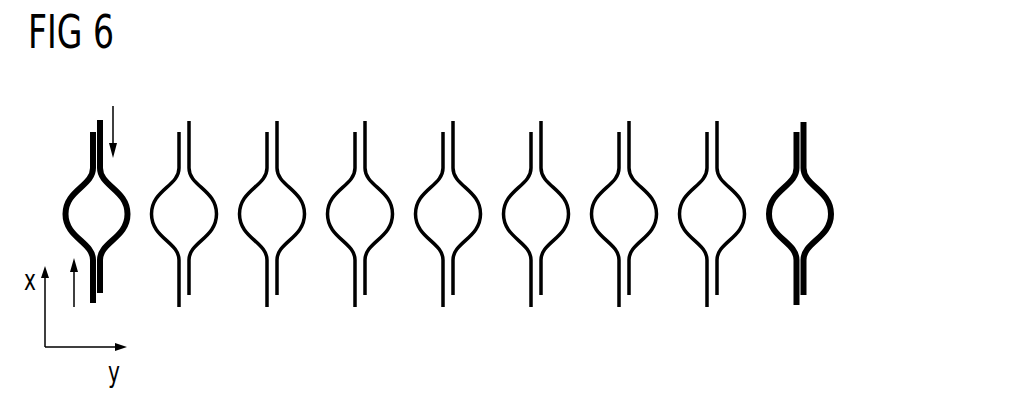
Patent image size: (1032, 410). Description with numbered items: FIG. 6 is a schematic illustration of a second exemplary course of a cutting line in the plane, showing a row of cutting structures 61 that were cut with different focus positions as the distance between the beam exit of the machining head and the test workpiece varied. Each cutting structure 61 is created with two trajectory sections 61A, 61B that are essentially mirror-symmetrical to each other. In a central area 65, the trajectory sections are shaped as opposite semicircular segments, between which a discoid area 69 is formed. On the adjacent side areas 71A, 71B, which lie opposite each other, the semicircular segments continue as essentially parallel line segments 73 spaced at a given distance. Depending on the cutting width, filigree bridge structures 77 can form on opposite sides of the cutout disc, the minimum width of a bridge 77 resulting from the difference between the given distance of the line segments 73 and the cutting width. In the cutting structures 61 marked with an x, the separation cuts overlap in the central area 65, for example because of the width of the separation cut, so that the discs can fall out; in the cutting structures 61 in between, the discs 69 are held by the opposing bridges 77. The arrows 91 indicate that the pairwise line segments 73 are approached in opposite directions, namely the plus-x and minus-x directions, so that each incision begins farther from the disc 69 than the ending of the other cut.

The cutting structure 61 is at (448, 168).
The first trajectory section 61A is at (436, 167).
The second trajectory section 61B is at (458, 167).
The central area 65 is at (846, 214).
The discoid area 69 is at (460, 230).
The first side area 71A is at (815, 145).
The second side area 71B is at (815, 278).
The line segment 73 is at (263, 148).
The bridge structure 77 is at (288, 146).
The arrow 91 is at (113, 106).